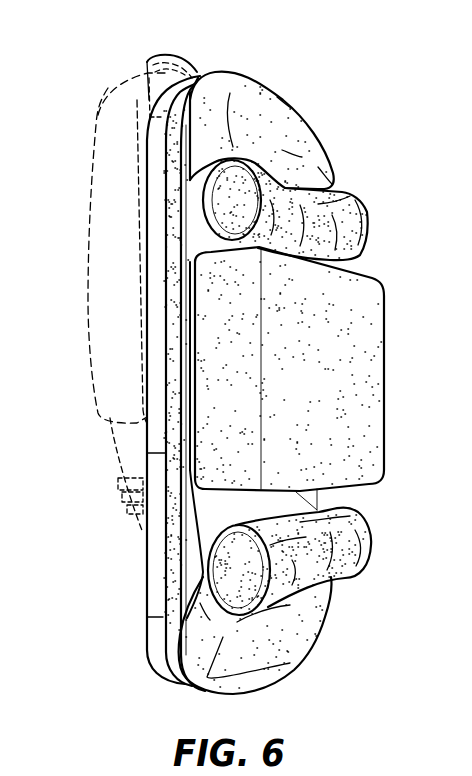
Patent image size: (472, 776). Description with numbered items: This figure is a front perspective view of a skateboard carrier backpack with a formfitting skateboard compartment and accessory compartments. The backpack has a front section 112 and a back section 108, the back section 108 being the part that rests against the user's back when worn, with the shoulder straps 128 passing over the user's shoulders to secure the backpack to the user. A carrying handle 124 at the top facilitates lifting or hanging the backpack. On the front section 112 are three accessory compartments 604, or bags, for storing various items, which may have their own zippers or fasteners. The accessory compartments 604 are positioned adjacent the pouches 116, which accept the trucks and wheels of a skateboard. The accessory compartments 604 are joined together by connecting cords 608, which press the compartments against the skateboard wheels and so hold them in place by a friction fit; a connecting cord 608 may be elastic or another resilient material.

The back section 108 is at (147, 650).
The front section 112 is at (180, 178).
The pouches 116 is at (371, 210).
The carrying handle 124 is at (193, 65).
The shoulder straps 128 is at (108, 88).
The accessory compartments 604 is at (319, 140).
The connecting cords 608 is at (193, 261).